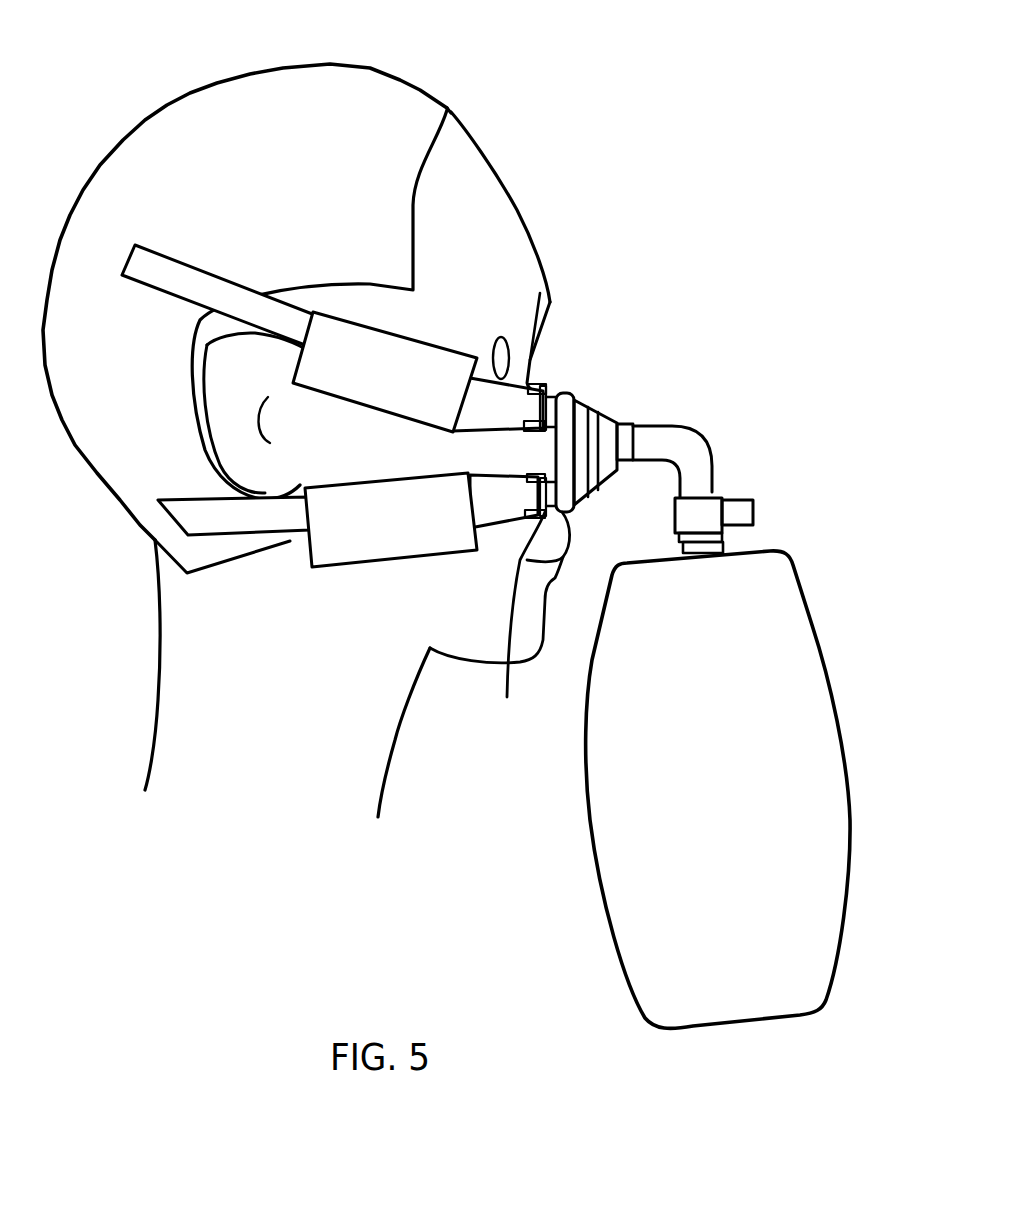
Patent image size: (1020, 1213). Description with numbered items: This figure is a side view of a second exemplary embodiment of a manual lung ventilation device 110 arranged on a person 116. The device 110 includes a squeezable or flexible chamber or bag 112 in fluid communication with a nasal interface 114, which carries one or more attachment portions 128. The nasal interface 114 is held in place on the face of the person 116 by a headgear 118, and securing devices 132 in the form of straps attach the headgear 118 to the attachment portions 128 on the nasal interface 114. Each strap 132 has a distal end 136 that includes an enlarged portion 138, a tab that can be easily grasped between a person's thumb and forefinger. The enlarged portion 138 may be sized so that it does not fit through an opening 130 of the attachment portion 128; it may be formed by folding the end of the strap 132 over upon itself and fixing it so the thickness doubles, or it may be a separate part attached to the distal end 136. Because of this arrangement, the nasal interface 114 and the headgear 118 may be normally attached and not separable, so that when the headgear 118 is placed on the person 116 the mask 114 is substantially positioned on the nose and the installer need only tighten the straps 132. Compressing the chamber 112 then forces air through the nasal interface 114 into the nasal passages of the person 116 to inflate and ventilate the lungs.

The manual lung ventilation device 110 is at (692, 93).
The squeezable chamber or bag 112 is at (773, 610).
The nasal interface 114 is at (598, 430).
The person 116 is at (187, 622).
The headgear 118 is at (182, 122).
The attachment portion 128 is at (556, 398).
The opening 130 is at (543, 292).
The securing device 132 is at (503, 407).
The distal end 136 is at (343, 423).
The enlarged portion 138 is at (417, 348).